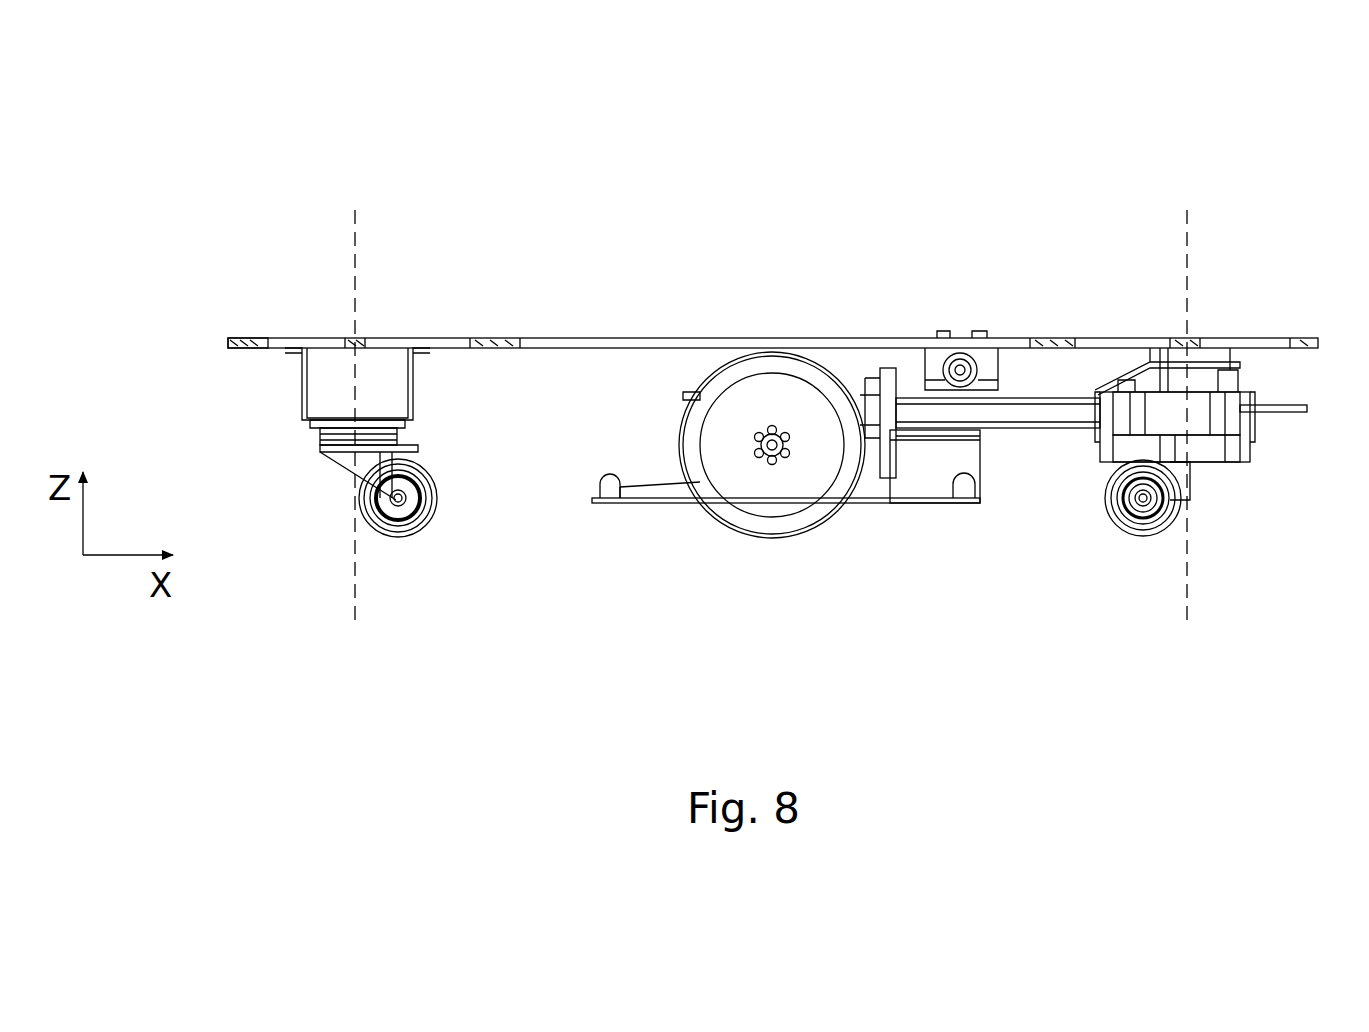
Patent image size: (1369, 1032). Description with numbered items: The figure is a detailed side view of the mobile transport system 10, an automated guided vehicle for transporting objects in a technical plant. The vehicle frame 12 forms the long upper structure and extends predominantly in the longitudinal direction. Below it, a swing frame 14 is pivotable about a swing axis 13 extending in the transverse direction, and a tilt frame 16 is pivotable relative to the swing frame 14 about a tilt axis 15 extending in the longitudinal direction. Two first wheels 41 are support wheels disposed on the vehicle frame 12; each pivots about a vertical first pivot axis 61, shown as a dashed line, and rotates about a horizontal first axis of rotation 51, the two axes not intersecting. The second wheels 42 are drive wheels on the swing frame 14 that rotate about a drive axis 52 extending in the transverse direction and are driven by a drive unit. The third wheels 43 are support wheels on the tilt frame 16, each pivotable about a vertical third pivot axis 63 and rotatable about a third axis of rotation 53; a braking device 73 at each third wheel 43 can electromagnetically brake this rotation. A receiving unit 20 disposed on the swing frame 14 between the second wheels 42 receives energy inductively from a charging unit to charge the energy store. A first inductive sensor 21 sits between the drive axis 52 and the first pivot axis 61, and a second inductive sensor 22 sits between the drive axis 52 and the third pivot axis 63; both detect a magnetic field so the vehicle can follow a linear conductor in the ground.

The mobile transport system 10 is at (199, 338).
The vehicle frame 12 is at (608, 345).
The swing axis 13 is at (965, 372).
The swing frame 14 is at (1015, 397).
The tilt axis 15 is at (1290, 408).
The tilt frame 16 is at (1172, 415).
The receiving unit 20 is at (678, 500).
The first inductive sensor 21 is at (612, 487).
The second inductive sensor 22 is at (963, 490).
The first wheel 41 is at (423, 517).
The second wheel 42 is at (742, 405).
The third wheel 43 is at (1147, 525).
The first axis of rotation 51 is at (397, 500).
The drive axis 52 is at (775, 440).
The third axis of rotation 53 is at (1141, 500).
The first pivot axis 61 is at (353, 280).
The third pivot axis 63 is at (1190, 260).
The braking device 73 is at (1205, 448).